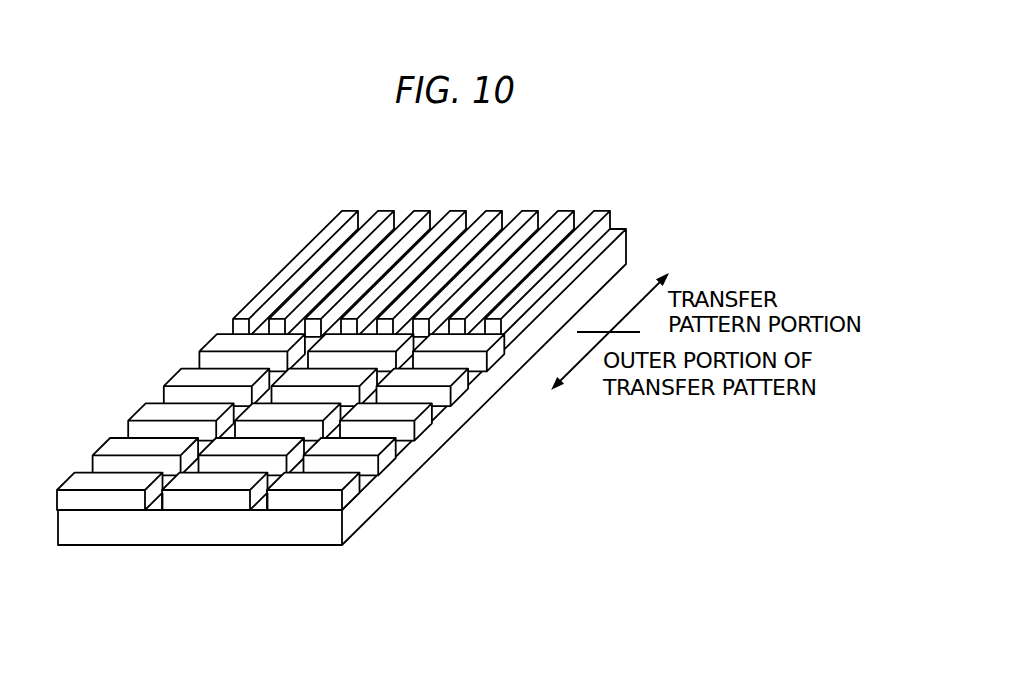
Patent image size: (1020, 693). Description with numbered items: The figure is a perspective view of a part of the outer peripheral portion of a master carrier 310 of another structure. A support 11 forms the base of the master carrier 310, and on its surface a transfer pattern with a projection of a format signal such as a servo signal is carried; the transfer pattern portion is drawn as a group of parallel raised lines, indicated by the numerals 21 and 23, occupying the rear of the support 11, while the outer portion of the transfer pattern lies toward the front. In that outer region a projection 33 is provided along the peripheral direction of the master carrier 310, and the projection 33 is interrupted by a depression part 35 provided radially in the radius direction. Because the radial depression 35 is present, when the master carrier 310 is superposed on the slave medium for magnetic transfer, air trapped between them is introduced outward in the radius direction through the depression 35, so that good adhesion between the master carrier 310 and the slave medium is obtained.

The master carrier 310 is at (335, 376).
The support 11 is at (373, 498).
The transfer pattern portion 21 is at (421, 252).
The line pattern protrusions 23 is at (343, 220).
The projection 33 is at (147, 410).
The depression part 35 is at (157, 507).